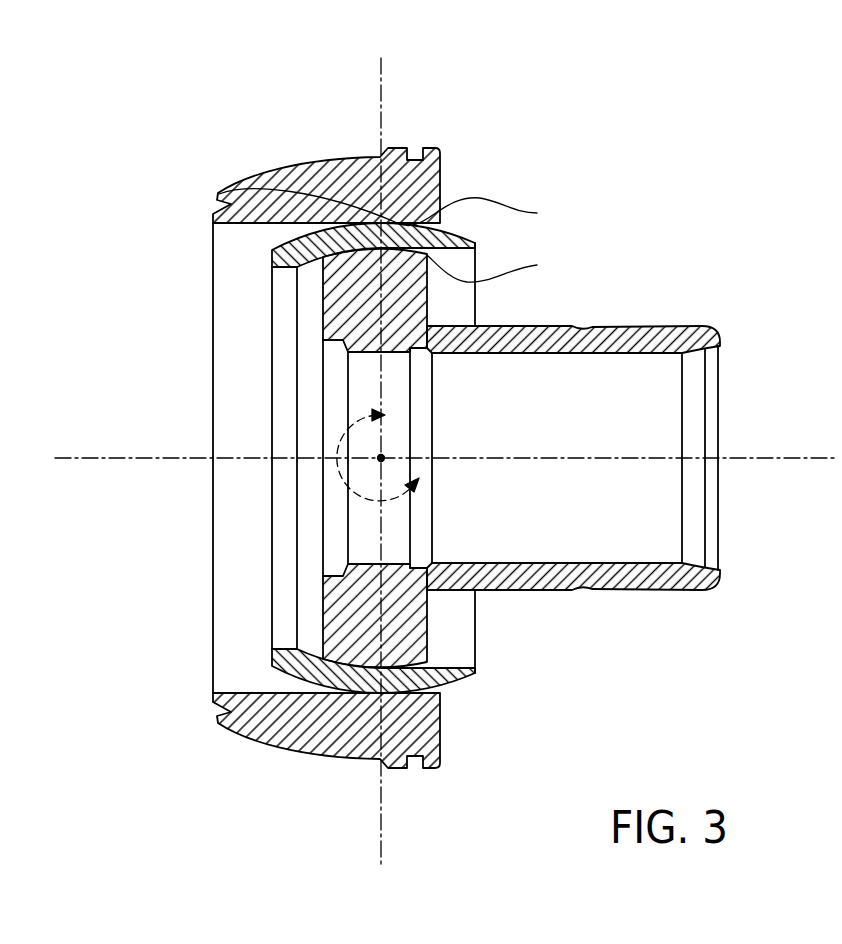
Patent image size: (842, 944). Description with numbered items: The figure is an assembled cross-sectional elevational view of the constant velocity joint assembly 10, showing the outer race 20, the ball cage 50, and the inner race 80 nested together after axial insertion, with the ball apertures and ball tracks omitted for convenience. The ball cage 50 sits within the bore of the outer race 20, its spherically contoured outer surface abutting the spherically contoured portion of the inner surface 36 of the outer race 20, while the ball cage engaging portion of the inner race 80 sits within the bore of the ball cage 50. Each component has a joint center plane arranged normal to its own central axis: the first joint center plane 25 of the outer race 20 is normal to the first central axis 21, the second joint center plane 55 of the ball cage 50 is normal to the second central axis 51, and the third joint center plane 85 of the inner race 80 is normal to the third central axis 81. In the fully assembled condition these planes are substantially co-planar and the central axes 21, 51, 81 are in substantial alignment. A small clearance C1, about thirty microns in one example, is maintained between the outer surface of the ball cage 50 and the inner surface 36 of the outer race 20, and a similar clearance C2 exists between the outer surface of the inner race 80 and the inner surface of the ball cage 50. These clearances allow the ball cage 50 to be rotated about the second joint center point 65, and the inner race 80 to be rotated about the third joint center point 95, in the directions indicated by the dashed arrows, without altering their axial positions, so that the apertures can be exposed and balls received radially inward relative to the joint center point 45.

The constant velocity joint assembly 10 is at (133, 99).
The outer race 20 is at (441, 192).
The first joint center plane 25 is at (461, 449).
The second joint center plane 55 is at (461, 449).
The third joint center plane 85 is at (384, 66).
The inner surface 36 is at (258, 690).
The joint center point 45 is at (457, 455).
The second joint center point 65 is at (457, 455).
The third joint center point 95 is at (383, 457).
The ball cage 50 is at (475, 238).
The inner race 80 is at (580, 452).
The first central axis 21 is at (759, 458).
The second central axis 51 is at (759, 458).
The third central axis 81 is at (776, 458).
The clearance C1 is at (221, 199).
The clearance C2 is at (297, 268).